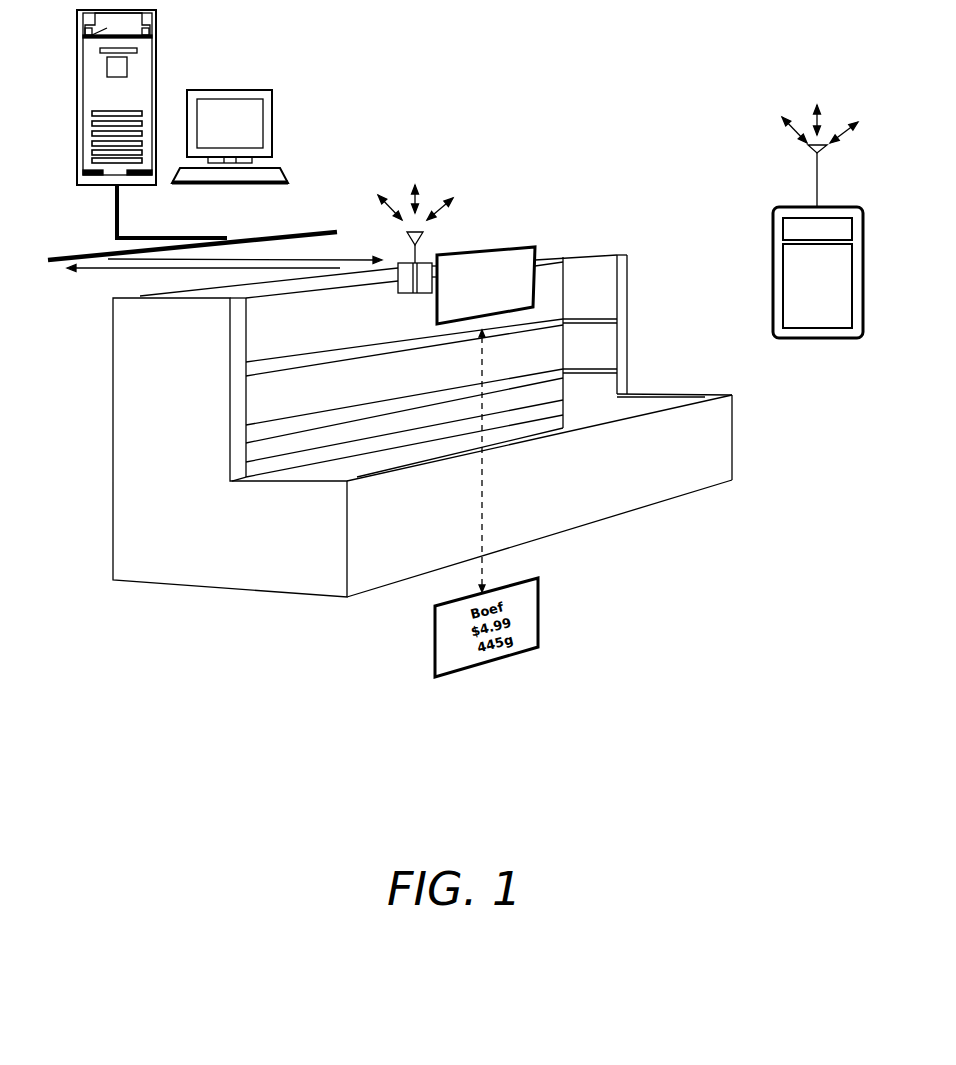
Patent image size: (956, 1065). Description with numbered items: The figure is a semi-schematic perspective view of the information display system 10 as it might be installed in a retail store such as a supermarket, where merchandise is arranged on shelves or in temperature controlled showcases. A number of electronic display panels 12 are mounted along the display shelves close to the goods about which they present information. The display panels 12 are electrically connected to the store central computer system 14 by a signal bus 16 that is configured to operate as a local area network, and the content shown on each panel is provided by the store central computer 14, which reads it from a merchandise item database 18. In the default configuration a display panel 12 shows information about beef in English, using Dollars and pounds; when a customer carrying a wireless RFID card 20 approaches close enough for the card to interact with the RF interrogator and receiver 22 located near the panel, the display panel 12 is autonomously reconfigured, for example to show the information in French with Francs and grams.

The information display system 10 is at (470, 83).
The electronic display panel 12 is at (530, 254).
The store central computer system 14 is at (78, 147).
The signal bus 16 is at (93, 253).
The merchandise item database 18 is at (81, 42).
The wireless RFID card 20 is at (772, 245).
The RF interrogator and receiver 22 is at (402, 286).